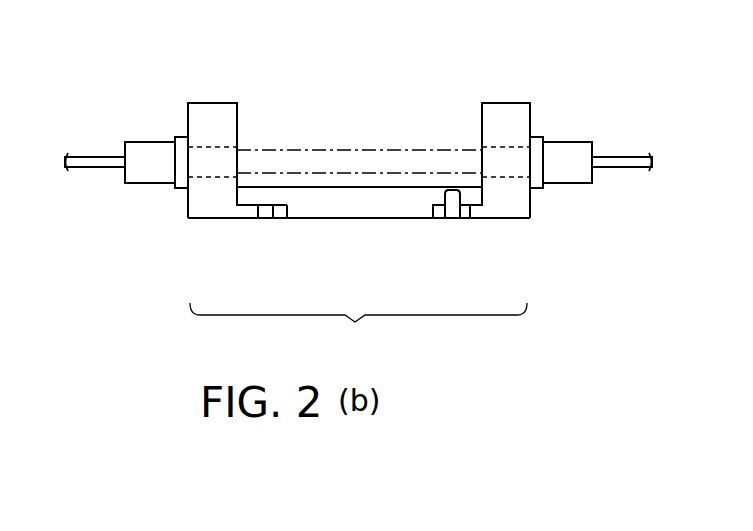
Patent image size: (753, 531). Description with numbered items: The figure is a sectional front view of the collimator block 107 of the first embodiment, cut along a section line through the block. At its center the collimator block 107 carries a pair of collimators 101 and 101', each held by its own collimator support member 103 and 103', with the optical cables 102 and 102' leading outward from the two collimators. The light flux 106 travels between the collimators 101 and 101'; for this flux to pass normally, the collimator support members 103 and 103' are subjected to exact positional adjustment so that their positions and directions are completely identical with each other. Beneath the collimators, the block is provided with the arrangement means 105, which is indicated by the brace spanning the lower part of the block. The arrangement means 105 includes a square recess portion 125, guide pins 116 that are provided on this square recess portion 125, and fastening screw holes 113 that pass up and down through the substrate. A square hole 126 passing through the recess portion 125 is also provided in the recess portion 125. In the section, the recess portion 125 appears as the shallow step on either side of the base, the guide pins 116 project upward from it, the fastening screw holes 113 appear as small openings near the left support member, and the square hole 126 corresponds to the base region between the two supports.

The collimator block 107 is at (372, 68).
The optical cable 102' is at (95, 142).
The collimator 101' is at (156, 140).
The collimator support member 103' is at (237, 139).
The collimator support member 103 is at (507, 139).
The light flux 106 is at (350, 150).
The collimator 101 is at (569, 141).
The optical cable 102 is at (631, 141).
The fastening screw holes 113 is at (267, 219).
The square recess portion 125 is at (251, 206).
The square hole 126 is at (365, 219).
The guide pins 116 is at (452, 210).
The arrangement means 105 is at (358, 329).